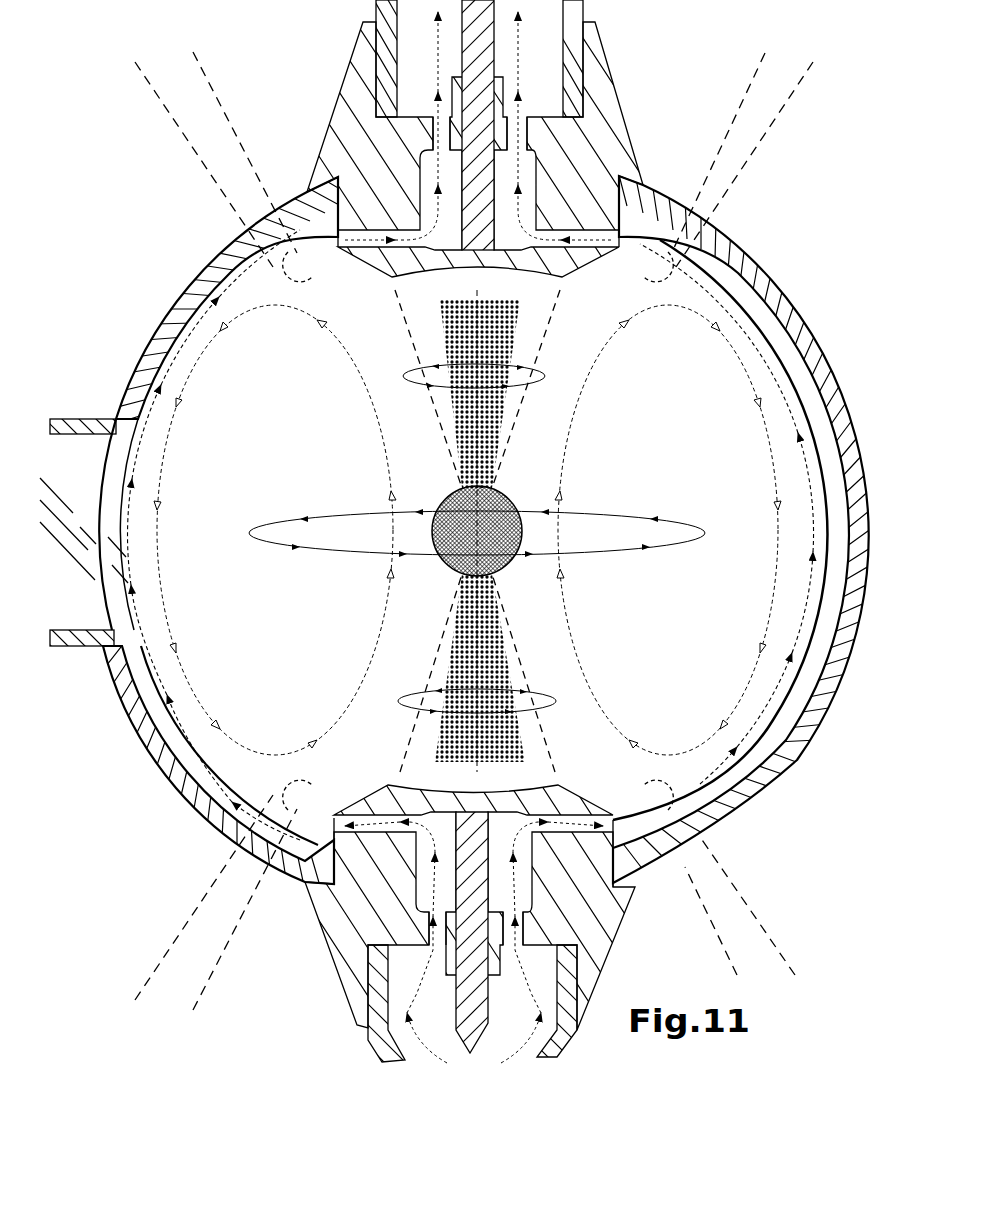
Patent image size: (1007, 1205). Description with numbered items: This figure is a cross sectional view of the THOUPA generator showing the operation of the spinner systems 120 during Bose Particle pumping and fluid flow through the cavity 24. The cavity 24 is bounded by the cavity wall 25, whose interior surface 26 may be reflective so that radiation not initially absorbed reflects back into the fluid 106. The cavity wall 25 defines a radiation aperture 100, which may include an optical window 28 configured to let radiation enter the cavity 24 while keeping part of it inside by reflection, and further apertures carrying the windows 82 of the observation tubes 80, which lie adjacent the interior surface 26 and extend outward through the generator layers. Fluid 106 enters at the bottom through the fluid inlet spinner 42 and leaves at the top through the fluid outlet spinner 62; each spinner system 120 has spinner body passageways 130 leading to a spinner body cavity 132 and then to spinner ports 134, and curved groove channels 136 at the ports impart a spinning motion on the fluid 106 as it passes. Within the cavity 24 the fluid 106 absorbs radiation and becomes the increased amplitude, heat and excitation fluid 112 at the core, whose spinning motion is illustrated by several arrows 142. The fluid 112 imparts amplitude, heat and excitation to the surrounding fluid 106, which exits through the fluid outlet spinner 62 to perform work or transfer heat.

The spinner system 120 is at (327, 60).
The fluid outlet spinner 62 is at (478, 125).
The fluid inlet spinner 42 is at (473, 937).
The spinner body passageways 130 is at (432, 134).
The spinner body cavity 132 is at (420, 197).
The spinner ports 134 is at (323, 225).
The curved groove channels 136 is at (490, 527).
The fluid 106 is at (243, 427).
The observation tubes 80 is at (160, 100).
The cavity wall 25 is at (232, 242).
The interior surface 26 is at (795, 350).
The cavity 24 is at (226, 487).
The optical window 28 is at (102, 593).
The radiation aperture 100 is at (95, 420).
The increased amplitude, heat and excitation fluid 112 is at (476, 537).
The arrows 142 is at (388, 572).
The windows 82 is at (308, 272).